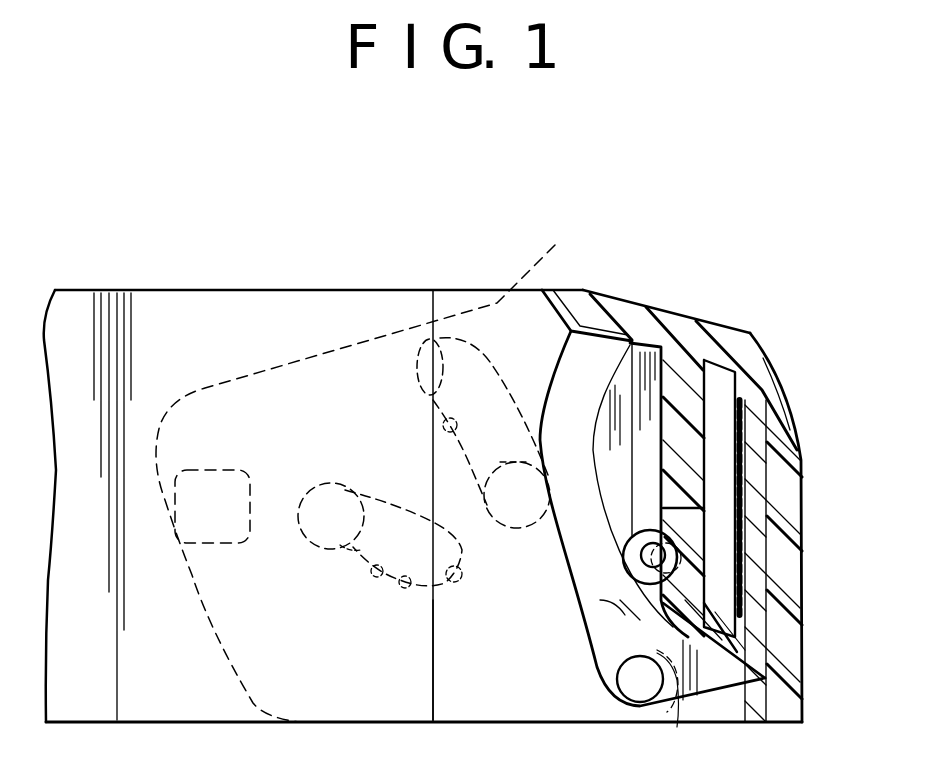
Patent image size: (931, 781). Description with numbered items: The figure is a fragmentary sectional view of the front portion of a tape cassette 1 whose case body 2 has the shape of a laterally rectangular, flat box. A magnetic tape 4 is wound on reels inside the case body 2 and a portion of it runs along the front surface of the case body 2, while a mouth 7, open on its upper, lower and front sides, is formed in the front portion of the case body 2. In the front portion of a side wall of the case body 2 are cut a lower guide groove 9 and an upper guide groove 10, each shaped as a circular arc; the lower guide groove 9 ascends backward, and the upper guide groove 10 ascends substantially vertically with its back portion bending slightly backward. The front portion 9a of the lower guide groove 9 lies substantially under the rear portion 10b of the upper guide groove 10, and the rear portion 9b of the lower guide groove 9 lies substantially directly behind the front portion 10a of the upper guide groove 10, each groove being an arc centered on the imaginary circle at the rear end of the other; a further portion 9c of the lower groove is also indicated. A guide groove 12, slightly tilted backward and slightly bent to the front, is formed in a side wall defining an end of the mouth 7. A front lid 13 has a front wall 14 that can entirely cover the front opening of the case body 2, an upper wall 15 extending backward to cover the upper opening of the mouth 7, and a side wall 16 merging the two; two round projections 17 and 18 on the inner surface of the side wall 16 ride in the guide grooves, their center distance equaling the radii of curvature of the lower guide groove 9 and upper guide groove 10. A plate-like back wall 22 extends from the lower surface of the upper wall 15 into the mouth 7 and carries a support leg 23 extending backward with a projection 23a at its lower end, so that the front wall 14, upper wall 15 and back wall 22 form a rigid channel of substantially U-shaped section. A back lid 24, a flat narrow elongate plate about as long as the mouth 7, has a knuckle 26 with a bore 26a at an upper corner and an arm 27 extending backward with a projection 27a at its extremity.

The tape cassette 1 is at (139, 268).
The case body 2 is at (190, 290).
The magnetic tape 4 is at (743, 497).
The mouth 7 is at (513, 678).
The lower guide groove 9 is at (375, 580).
The front portion of lower guide groove 9a is at (455, 585).
The rear portion of lower guide groove 9b is at (318, 490).
The guide portion 9c is at (404, 590).
The upper guide groove 10 is at (443, 442).
The front portion of upper guide groove 10a is at (502, 527).
The rear portion of upper guide groove 10b is at (426, 370).
The guide groove 12 is at (582, 609).
The front lid 13 is at (780, 229).
The front wall 14 is at (770, 338).
The upper wall 15 is at (657, 300).
The side wall 16 is at (587, 285).
The round projection 17 is at (348, 550).
The round projection 18 is at (510, 465).
The back wall 22 is at (700, 448).
The support leg 23 is at (647, 475).
The projection 23a is at (657, 543).
The back lid 24 is at (710, 643).
The knuckle 26 is at (627, 577).
The bore 26a is at (622, 600).
The arm 27 is at (667, 703).
The projection 27a is at (680, 703).